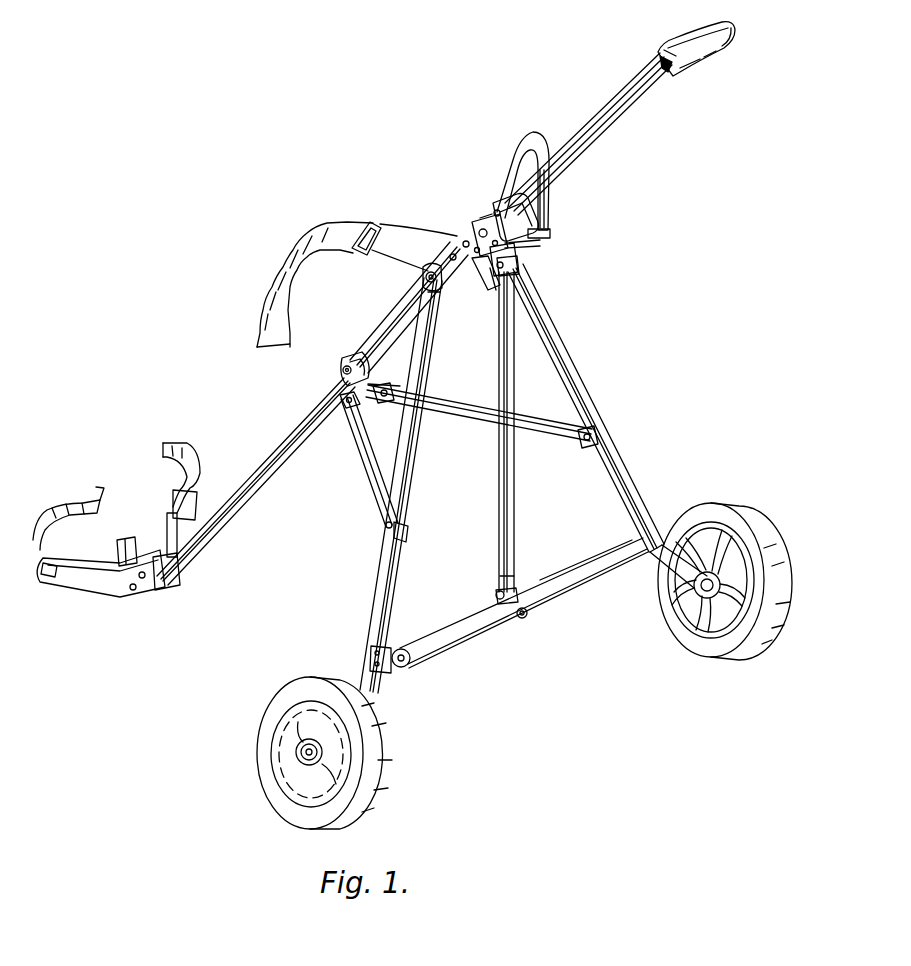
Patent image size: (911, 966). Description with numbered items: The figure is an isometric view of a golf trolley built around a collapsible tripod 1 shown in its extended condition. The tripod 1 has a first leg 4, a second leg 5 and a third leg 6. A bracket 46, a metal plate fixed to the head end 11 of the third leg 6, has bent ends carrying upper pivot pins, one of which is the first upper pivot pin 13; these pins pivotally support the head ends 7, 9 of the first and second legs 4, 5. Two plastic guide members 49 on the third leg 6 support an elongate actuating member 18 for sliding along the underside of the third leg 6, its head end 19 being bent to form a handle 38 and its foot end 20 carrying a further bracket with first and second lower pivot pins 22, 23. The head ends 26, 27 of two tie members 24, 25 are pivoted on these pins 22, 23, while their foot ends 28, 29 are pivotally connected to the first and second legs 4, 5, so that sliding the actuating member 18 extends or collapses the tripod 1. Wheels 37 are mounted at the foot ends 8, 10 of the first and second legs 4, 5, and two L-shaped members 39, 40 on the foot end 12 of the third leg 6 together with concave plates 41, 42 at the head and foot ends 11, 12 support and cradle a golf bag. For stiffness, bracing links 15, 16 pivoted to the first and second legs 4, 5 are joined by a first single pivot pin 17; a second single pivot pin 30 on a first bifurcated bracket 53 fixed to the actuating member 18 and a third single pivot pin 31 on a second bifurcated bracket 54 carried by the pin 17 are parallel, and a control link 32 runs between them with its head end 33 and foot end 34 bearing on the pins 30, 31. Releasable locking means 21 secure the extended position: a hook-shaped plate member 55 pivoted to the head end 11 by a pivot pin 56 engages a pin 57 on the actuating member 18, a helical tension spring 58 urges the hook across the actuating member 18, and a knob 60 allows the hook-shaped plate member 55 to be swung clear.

The collapsible tripod 1 is at (230, 232).
The first leg 4 is at (402, 467).
The second leg 5 is at (580, 397).
The third leg 6 is at (373, 343).
The head end of first leg 7 is at (437, 313).
The foot end of first leg 8 is at (375, 682).
The head end of second leg 9 is at (497, 270).
The foot end of second leg 10 is at (678, 580).
The head end of third leg 11 is at (495, 180).
The foot end of third leg 12 is at (165, 585).
The first upper pivot pin 13 is at (421, 268).
The bracing link 15 is at (462, 637).
The bracing link 16 is at (580, 570).
The first single pivot pin 17 is at (524, 616).
The actuating member 18 is at (592, 145).
The head end of actuating member 19 is at (669, 72).
The foot end of actuating member 20 is at (343, 385).
The releasable locking means 21 is at (478, 238).
The first lower pivot pin 22 is at (343, 395).
The second lower pivot pin 23 is at (380, 403).
The tie member 24 is at (362, 457).
The tie member 25 is at (458, 410).
The head end of tie member 26 is at (340, 405).
The head end of tie member 27 is at (393, 387).
The foot end of tie member 28 is at (407, 530).
The foot end of tie member 29 is at (592, 430).
The second single pivot pin 30 is at (507, 240).
The third single pivot pin 31 is at (496, 597).
The control link 32 is at (513, 363).
The head end of control link 33 is at (513, 257).
The foot end of control link 34 is at (499, 570).
The wheels 37 is at (728, 643).
The handle 38 is at (698, 35).
The L-shaped member 39 is at (92, 557).
The L-shaped member 40 is at (118, 533).
The concave plate 41 is at (377, 250).
The concave plate 42 is at (88, 582).
The bracket 46 is at (372, 222).
The guide members 49 is at (345, 362).
The first bifurcated bracket 53 is at (507, 246).
The second bifurcated bracket 54 is at (496, 593).
The hook-shaped plate member 55 is at (503, 243).
The pivot pin 56 is at (472, 225).
The pin 57 is at (472, 263).
The helical tension spring 58 is at (465, 235).
The knob 60 is at (478, 225).